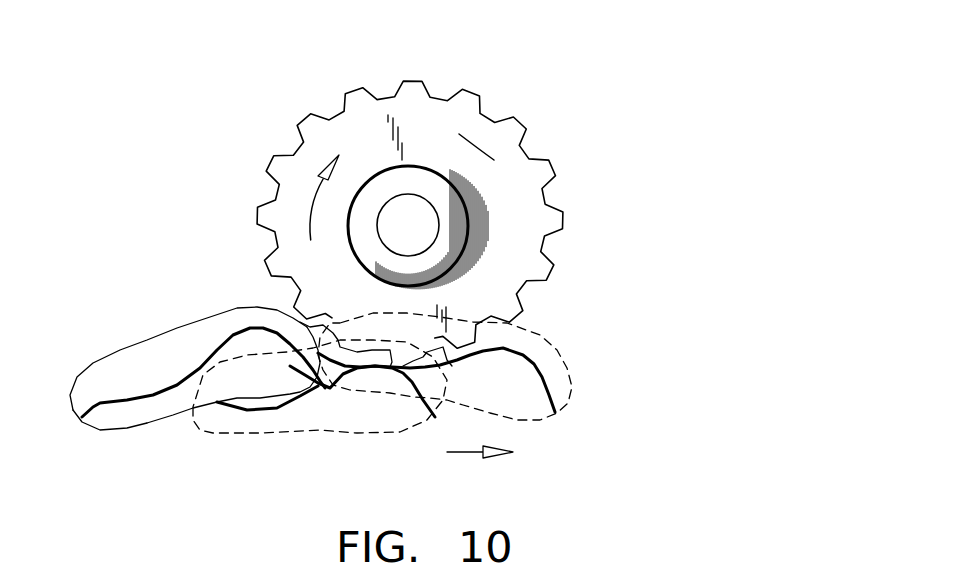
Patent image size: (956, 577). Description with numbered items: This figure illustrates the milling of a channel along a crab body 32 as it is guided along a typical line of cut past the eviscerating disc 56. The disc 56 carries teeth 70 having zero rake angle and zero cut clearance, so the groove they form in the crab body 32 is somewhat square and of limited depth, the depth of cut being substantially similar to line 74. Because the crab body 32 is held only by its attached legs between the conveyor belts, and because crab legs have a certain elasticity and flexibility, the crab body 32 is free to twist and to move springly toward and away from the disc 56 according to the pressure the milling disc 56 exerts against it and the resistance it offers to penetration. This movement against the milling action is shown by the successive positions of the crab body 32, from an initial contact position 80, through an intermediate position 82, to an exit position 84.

The crab body 32 is at (140, 337).
The eviscerating disc 56 is at (471, 160).
The teeth 70 is at (545, 187).
The line 74 is at (213, 350).
The initial contact position 80 is at (138, 424).
The intermediate position 82 is at (277, 432).
The exit position 84 is at (538, 417).